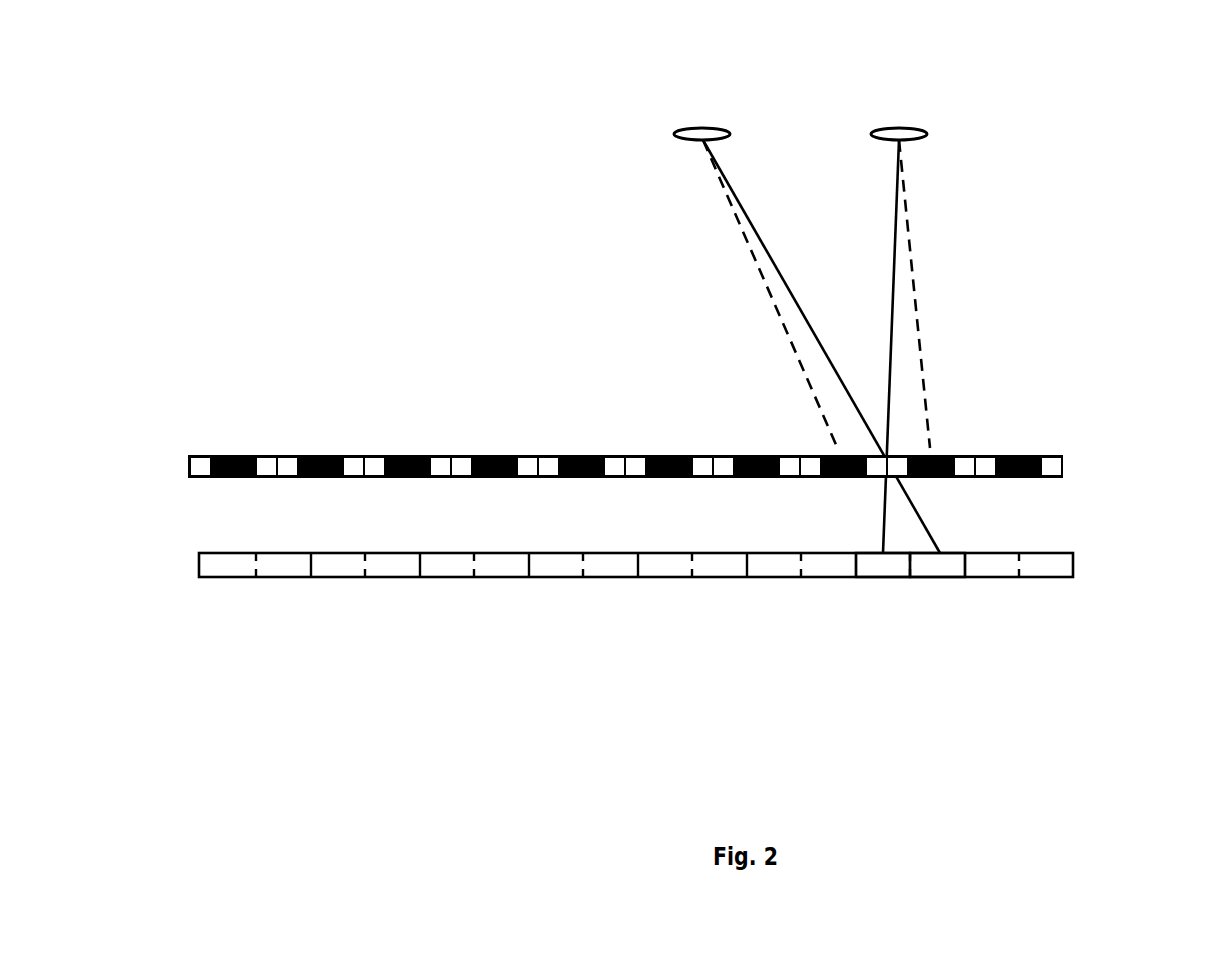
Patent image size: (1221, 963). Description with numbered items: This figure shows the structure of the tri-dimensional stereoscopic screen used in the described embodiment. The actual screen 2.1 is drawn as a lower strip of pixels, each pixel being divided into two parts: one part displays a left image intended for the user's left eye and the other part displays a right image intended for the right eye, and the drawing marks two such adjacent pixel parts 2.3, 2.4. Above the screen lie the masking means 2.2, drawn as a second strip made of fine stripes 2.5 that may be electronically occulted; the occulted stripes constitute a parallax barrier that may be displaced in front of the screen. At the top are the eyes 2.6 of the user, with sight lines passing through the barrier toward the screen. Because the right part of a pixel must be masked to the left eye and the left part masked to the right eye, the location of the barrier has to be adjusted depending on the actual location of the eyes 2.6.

The screen 2.1 is at (1075, 564).
The masking means 2.2 is at (1065, 463).
The pixel for first eye 2.3 is at (943, 563).
The pixel for second eye 2.4 is at (880, 563).
The fine stripes 2.5 is at (922, 455).
The eyes 2.6 is at (703, 127).